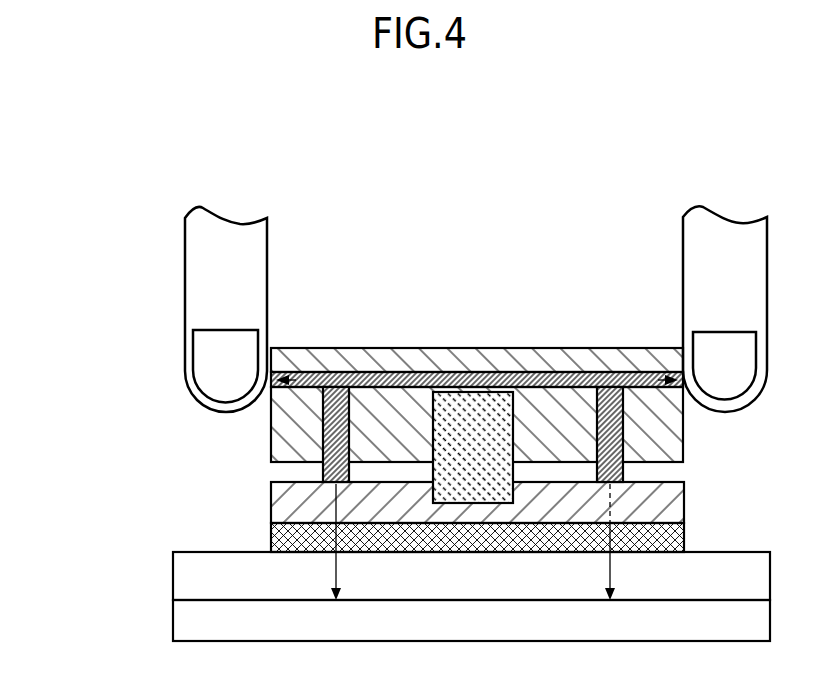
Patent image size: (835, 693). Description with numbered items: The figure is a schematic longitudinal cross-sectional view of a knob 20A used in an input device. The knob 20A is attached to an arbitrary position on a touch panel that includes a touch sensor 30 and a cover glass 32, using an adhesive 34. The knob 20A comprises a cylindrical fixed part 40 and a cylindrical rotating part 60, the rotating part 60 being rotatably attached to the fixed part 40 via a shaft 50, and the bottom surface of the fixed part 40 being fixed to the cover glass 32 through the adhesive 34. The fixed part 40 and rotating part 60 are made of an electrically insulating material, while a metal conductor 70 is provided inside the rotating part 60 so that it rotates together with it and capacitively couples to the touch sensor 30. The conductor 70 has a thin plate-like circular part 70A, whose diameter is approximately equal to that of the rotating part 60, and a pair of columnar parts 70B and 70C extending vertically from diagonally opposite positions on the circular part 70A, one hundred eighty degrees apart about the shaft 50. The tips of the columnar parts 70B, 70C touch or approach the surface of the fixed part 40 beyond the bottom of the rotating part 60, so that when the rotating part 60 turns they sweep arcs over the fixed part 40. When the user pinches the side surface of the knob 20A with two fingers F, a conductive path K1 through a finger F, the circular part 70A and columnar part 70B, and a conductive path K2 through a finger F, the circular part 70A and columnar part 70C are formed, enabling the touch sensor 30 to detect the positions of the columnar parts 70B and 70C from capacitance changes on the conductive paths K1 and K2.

The knob 20A is at (88, 212).
The finger F is at (184, 283).
The conductive path K1 is at (317, 365).
The conductive path K2 is at (628, 365).
The conductor 70 is at (70, 365).
The thin plate-like circular part 70A is at (426, 365).
The columnar part 70B is at (322, 447).
The columnar part 70C is at (624, 445).
The rotating part 60 is at (539, 374).
The shaft 50 is at (493, 370).
The fixed part 40 is at (684, 504).
The adhesive 34 is at (271, 543).
The cover glass 32 is at (173, 576).
The touch sensor 30 is at (173, 622).